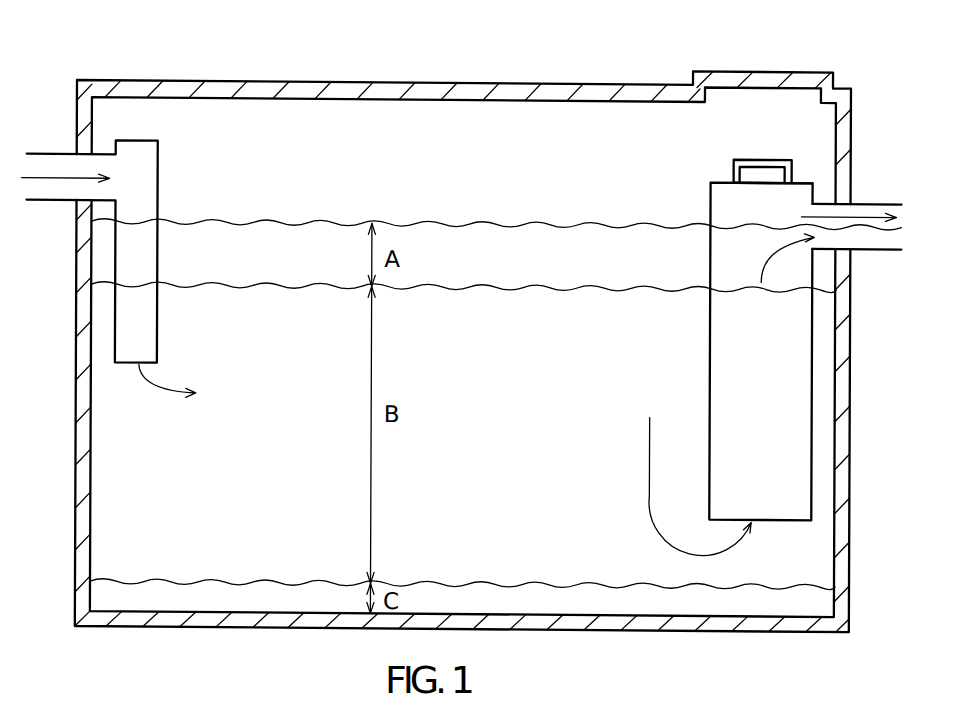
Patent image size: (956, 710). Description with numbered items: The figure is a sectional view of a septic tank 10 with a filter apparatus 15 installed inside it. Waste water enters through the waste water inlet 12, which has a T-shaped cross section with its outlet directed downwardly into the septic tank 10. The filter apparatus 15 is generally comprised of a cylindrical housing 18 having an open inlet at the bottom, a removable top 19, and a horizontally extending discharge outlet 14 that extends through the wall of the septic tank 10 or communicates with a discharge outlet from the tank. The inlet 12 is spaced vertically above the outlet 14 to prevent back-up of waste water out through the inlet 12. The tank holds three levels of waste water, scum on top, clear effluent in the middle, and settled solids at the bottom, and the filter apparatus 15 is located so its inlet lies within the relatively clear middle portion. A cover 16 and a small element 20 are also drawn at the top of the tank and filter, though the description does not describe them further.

The septic tank 10 is at (378, 76).
The waste water inlet 12 is at (142, 162).
The discharge outlet 14 is at (868, 207).
The filter apparatus 15 is at (700, 188).
The cover 16 is at (765, 66).
The cylindrical housing 18 is at (748, 369).
The removable top 19 is at (806, 175).
The vent 20 is at (750, 154).